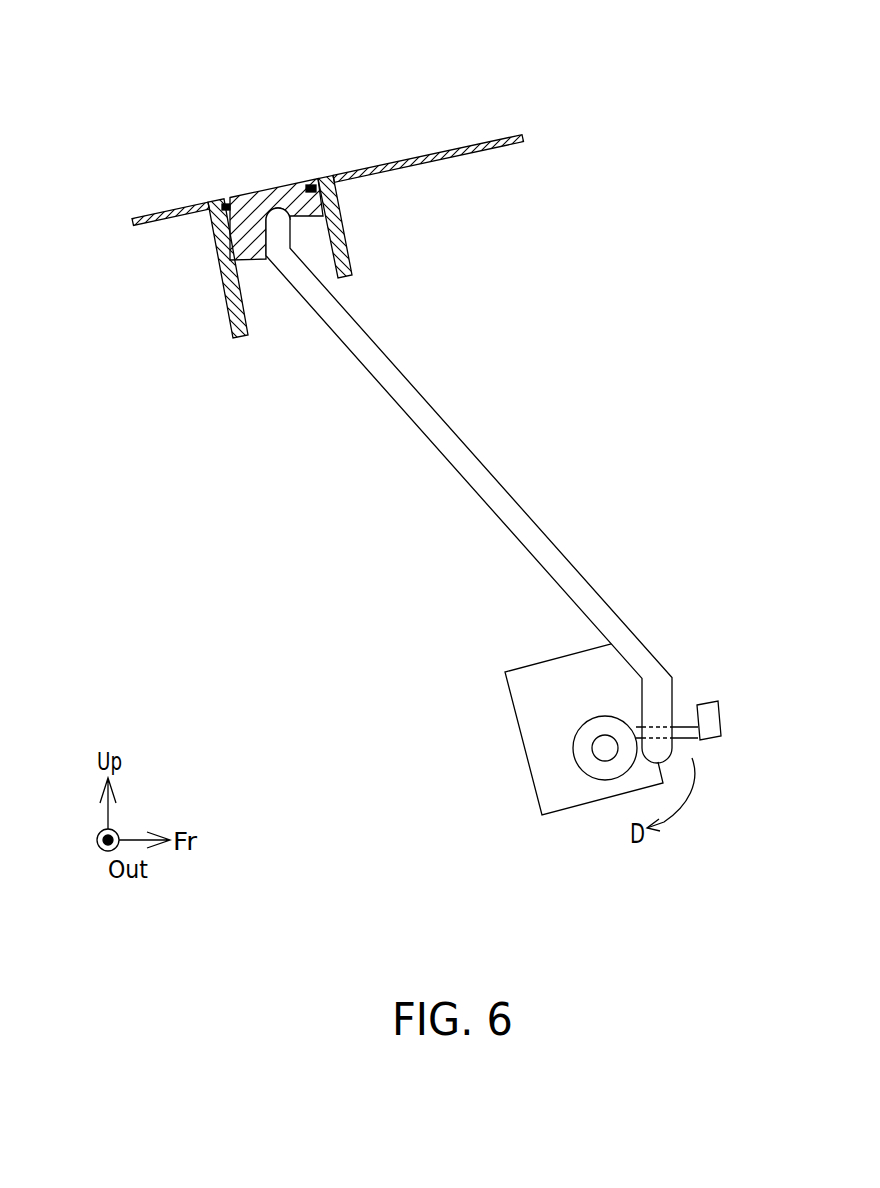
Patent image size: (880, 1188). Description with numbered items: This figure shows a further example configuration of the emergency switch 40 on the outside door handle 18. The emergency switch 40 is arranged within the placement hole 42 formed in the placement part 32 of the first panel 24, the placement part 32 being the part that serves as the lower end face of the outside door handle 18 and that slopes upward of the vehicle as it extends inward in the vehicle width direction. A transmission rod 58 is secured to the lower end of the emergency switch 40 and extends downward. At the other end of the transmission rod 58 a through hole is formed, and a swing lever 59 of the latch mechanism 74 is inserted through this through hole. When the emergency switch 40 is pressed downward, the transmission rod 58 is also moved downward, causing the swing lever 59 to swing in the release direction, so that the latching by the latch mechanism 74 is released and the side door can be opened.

The outside door handle 18 is at (315, 100).
The placement part 32 is at (412, 157).
The first panel 24 is at (328, 180).
The emergency switch 40 is at (248, 197).
The placement hole 42 is at (214, 234).
The transmission rod 58 is at (373, 338).
The latch mechanism 74 is at (505, 703).
The swing lever 59 is at (695, 754).